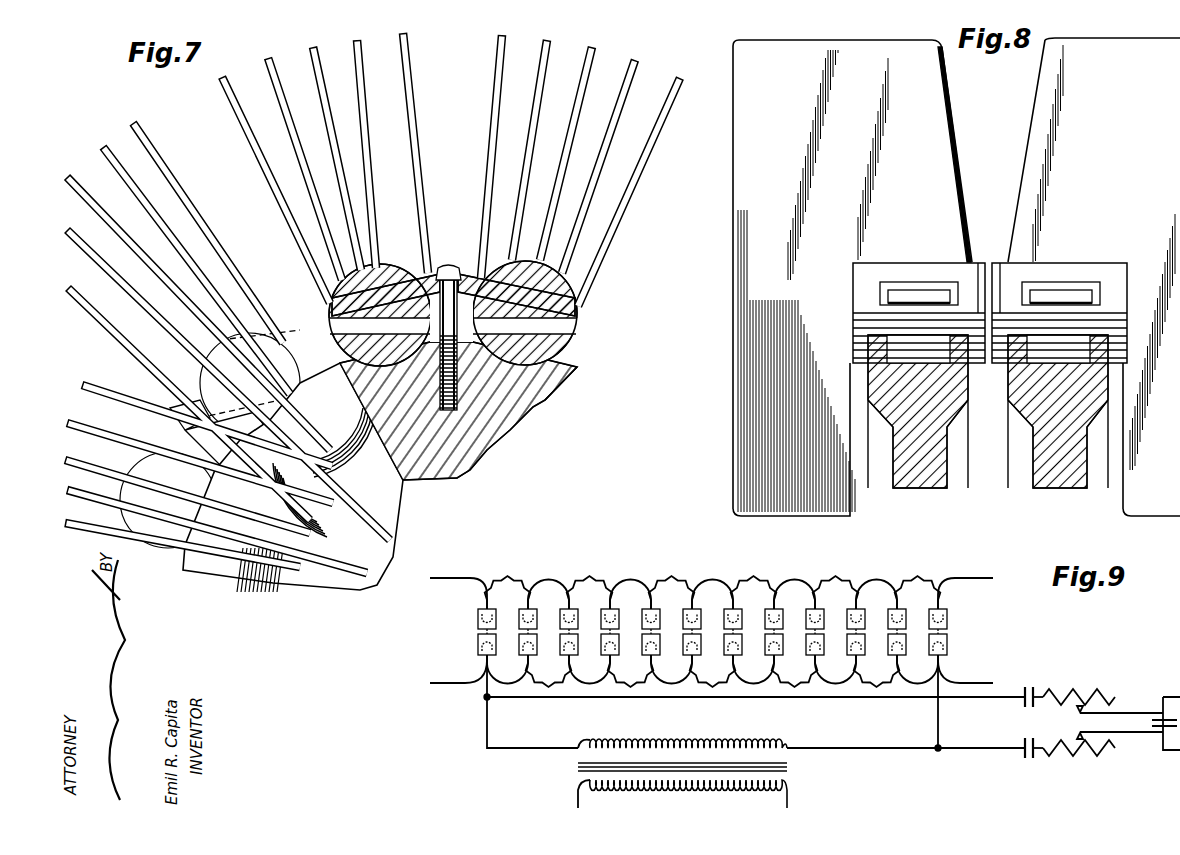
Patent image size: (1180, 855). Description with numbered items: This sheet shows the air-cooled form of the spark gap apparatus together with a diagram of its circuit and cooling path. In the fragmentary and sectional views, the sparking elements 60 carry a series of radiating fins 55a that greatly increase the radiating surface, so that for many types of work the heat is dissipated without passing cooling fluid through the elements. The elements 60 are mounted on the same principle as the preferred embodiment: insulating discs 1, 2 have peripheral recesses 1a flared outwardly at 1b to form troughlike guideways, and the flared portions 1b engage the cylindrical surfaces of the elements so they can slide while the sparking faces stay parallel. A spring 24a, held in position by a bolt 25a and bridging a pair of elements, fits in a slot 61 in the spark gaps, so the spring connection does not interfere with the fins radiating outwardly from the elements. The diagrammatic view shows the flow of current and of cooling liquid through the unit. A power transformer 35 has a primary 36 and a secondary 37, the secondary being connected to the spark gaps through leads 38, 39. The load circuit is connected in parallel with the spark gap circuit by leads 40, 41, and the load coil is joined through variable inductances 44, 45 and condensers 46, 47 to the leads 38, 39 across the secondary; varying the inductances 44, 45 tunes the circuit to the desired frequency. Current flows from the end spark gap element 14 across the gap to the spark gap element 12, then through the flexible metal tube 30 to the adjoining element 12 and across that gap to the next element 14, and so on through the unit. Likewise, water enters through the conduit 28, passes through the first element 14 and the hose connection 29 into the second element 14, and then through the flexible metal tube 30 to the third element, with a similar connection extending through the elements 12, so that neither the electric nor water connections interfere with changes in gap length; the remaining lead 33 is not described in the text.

In FIG. 8, the disc 1 is at (912, 480).
In FIG. 7, the recess 1a is at (510, 405).
In FIG. 7, the outwardly flared portion 1b is at (566, 372).
In FIG. 8, the disc 2 is at (1072, 452).
In FIG. 9, the spark gap element 12 is at (478, 614).
In FIG. 9, the spark gap element 14 is at (478, 642).
In FIG. 7, the spring 24a is at (452, 266).
In FIG. 8, the spring 24a is at (922, 272).
In FIG. 7, the bolt 25a is at (349, 476).
In FIG. 9, the conduit 28 is at (452, 575).
In FIG. 9, the hose connection 29 is at (484, 697).
In FIG. 9, the flexible metal tube 30 is at (508, 583).
In FIG. 9, the lead wire 33 is at (972, 575).
In FIG. 9, the power transformer 35 is at (790, 768).
In FIG. 9, the primary 36 is at (792, 804).
In FIG. 9, the secondary 37 is at (736, 742).
In FIG. 9, the lead 38 is at (950, 752).
In FIG. 9, the lead 39 is at (486, 720).
In FIG. 9, the lead 40 is at (1000, 694).
In FIG. 9, the lead 41 is at (998, 750).
In FIG. 9, the variable inductance 44 is at (1100, 690).
In FIG. 9, the variable inductance 45 is at (1092, 760).
In FIG. 9, the condenser 46 is at (1036, 688).
In FIG. 9, the condenser 47 is at (1022, 740).
In FIG. 7, the fin 55a is at (530, 108).
In FIG. 8, the fin 55a is at (1030, 136).
In FIG. 7, the sparking element 60 is at (574, 334).
In FIG. 8, the sparking element 60 is at (1055, 260).
In FIG. 7, the slot 61 is at (578, 302).
In FIG. 8, the slot 61 is at (1098, 292).